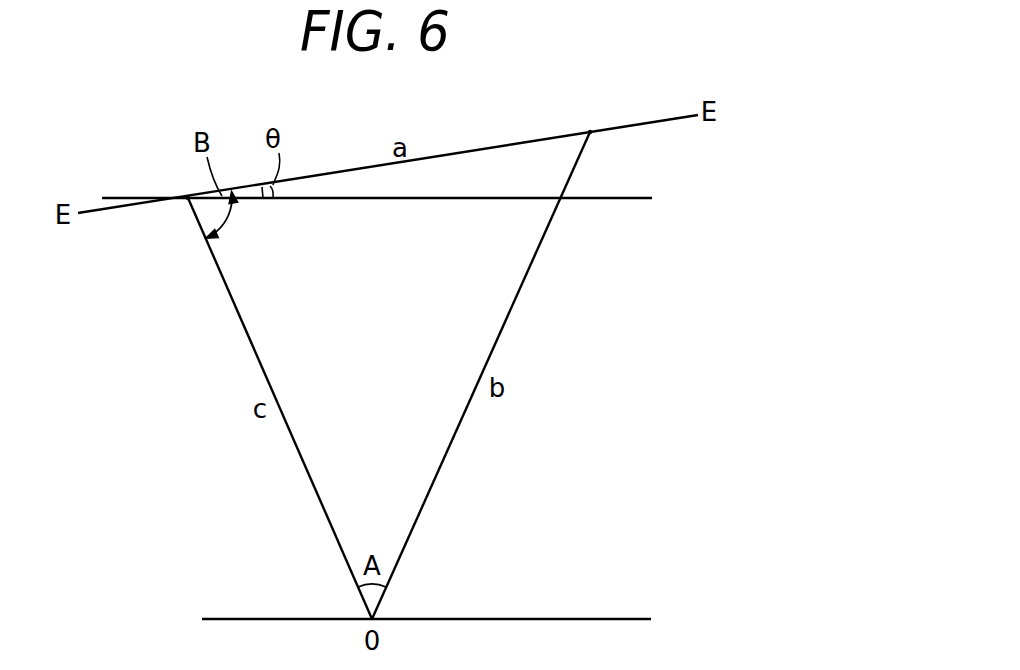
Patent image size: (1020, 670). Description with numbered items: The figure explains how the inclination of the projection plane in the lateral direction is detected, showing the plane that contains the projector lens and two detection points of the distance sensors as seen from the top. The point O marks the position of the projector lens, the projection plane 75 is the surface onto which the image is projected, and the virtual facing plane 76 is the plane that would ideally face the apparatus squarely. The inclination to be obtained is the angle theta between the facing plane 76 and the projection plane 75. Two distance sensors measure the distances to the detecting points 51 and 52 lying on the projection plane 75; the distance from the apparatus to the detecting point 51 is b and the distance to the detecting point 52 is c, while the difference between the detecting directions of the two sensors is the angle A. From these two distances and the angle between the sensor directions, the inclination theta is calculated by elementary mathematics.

The detecting point 51 is at (589, 130).
The detecting point 52 is at (187, 202).
The projection plane 75 is at (645, 123).
The virtual plane (facing plane) 76 is at (625, 200).